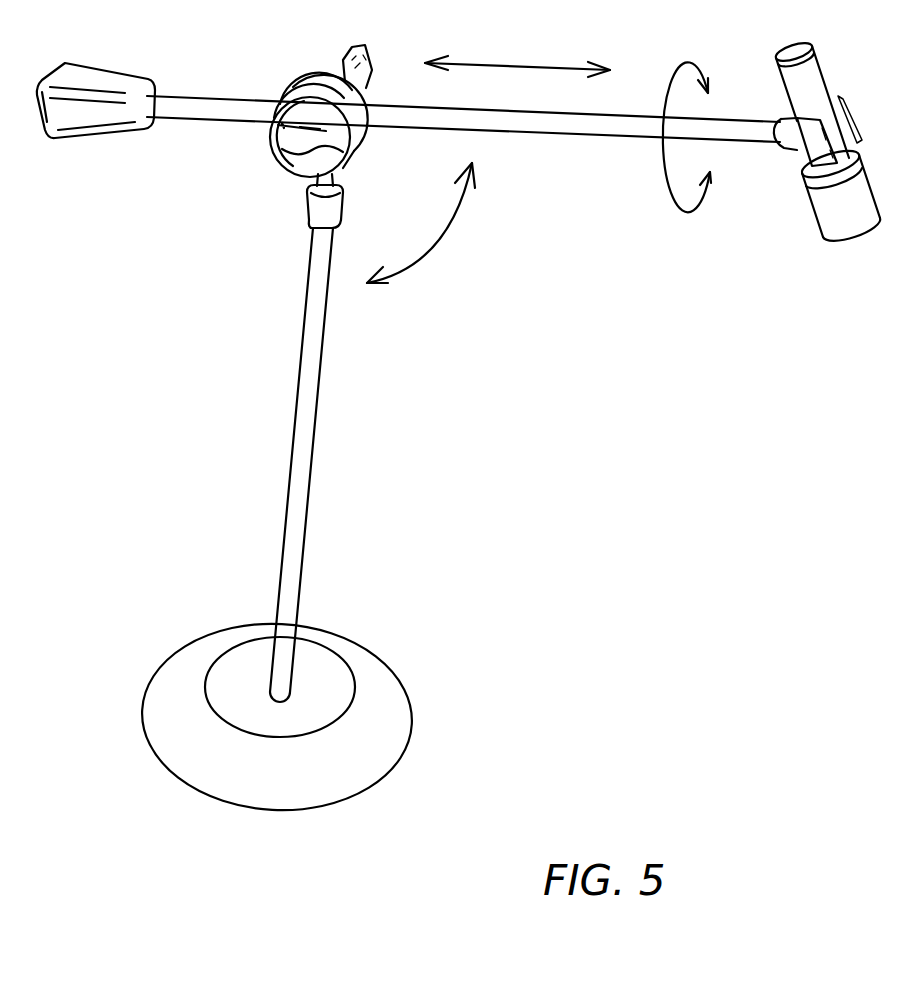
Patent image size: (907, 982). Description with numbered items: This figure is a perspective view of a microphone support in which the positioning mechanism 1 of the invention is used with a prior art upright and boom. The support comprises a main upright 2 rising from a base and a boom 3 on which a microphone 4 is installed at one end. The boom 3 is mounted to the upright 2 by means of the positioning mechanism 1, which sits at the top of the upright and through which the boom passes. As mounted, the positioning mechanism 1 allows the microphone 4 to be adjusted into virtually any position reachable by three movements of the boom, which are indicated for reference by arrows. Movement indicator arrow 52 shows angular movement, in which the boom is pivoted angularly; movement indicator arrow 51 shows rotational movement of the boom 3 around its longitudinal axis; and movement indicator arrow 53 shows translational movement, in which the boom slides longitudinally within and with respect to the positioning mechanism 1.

The positioning mechanism 1 is at (313, 68).
The main upright 2 is at (294, 457).
The boom 3 is at (237, 114).
The microphone 4 is at (826, 79).
The movement indicator arrow 51 is at (663, 148).
The movement indicator arrow 52 is at (421, 233).
The movement indicator arrow 53 is at (517, 51).